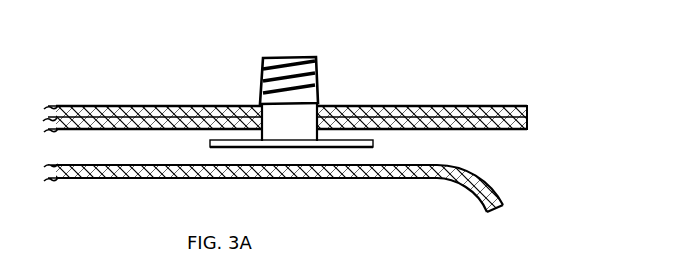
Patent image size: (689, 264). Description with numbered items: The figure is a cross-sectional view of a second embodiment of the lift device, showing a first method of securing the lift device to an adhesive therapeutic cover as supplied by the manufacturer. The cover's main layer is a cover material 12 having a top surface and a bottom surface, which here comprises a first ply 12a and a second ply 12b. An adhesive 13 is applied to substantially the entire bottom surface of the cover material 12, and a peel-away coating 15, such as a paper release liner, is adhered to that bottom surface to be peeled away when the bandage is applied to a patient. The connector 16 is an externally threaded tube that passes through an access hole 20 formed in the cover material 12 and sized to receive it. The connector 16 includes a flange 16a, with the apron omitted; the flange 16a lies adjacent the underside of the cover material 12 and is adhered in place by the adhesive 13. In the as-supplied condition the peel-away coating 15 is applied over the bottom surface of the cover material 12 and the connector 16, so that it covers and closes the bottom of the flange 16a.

The cover material 12 is at (443, 104).
The first ply 12a is at (502, 107).
The second ply 12b is at (529, 116).
The adhesive 13 is at (505, 125).
The peel-away coating 15 is at (415, 180).
The connector 16 is at (279, 88).
The flange 16a is at (375, 143).
The access hole 20 is at (318, 102).